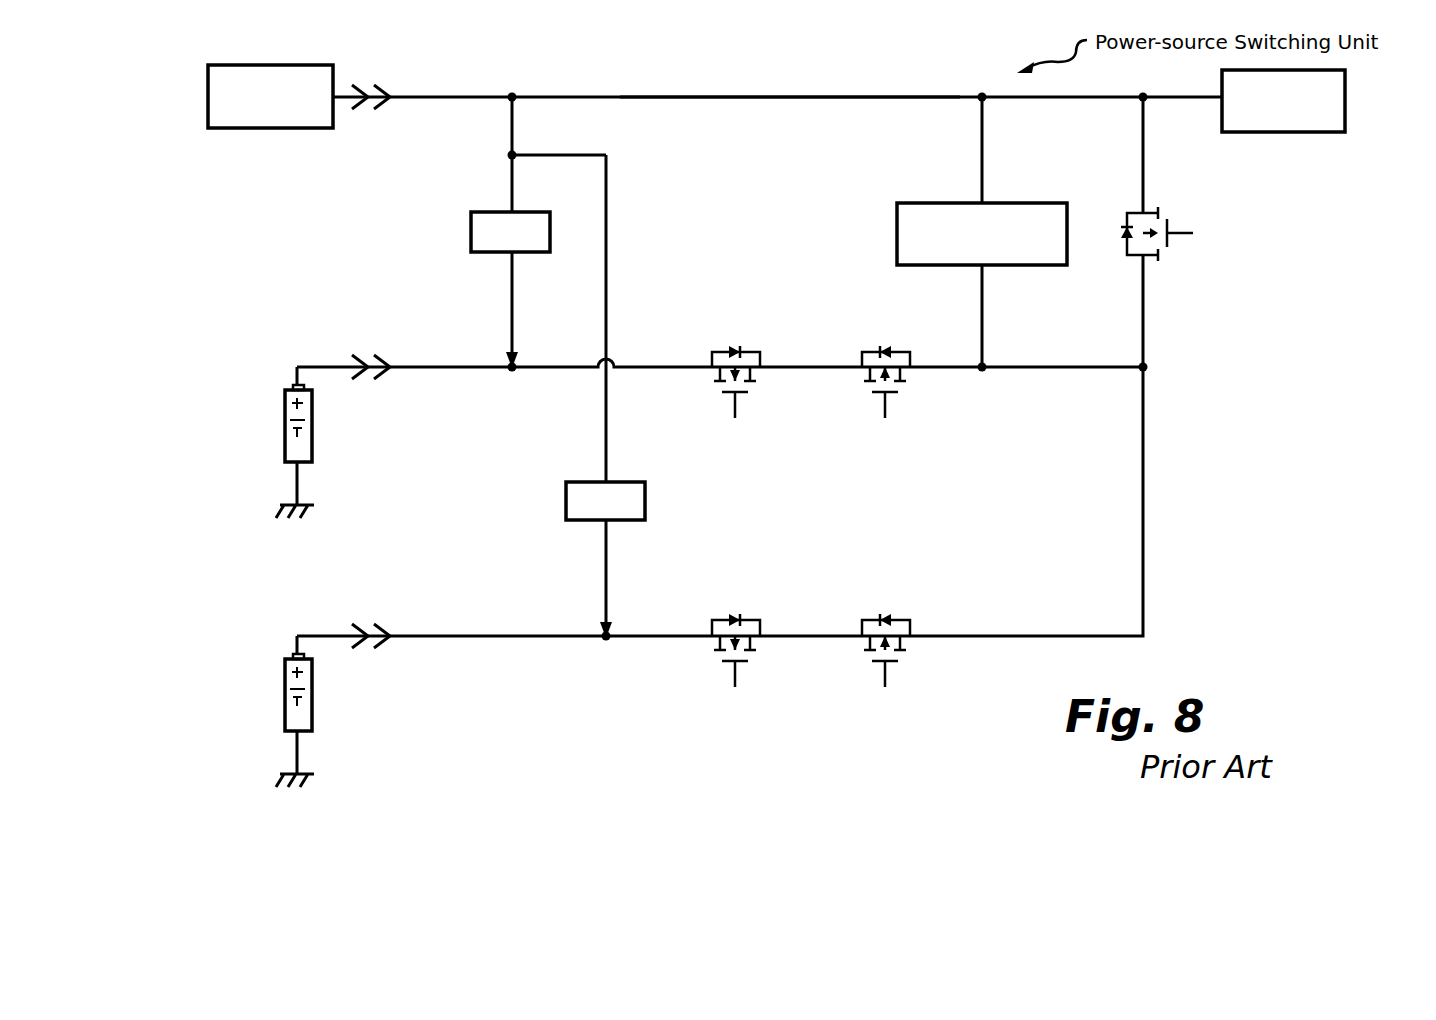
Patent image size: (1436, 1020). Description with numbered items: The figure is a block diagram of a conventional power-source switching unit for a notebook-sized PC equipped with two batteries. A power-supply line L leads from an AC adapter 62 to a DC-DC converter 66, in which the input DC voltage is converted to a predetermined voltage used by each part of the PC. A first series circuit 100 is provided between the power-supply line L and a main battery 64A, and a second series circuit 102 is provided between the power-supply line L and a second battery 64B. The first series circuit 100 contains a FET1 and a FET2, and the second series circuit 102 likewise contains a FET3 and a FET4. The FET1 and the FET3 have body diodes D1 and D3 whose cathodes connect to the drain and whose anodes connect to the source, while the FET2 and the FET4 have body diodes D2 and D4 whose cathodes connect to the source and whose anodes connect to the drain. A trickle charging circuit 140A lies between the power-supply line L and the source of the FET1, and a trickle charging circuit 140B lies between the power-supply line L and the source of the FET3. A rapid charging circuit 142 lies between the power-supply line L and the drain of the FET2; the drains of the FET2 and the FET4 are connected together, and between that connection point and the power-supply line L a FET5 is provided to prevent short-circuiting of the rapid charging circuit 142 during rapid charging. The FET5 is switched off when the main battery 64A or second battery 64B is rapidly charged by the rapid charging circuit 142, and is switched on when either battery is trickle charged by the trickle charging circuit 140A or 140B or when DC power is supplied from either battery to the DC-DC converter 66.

The AC adapter 62 is at (236, 65).
The DC-DC converter 66 is at (1300, 132).
The power-supply line L is at (796, 97).
The trickle charging circuit 140A is at (471, 232).
The trickle charging circuit 140B is at (566, 500).
The rapid charging circuit 142 is at (1020, 203).
The main battery 64A is at (285, 427).
The second battery 64B is at (285, 696).
The first series circuit 100 is at (786, 345).
The second series circuit 102 is at (786, 614).
The field effect transistor FET1 is at (711, 380).
The field effect transistor FET2 is at (861, 380).
The field effect transistor FET3 is at (711, 649).
The field effect transistor FET4 is at (861, 649).
The field effect transistor FET5 is at (1175, 225).
The body diode D1 is at (732, 352).
The body diode D2 is at (845, 336).
The body diode D3 is at (732, 620).
The body diode D4 is at (845, 604).